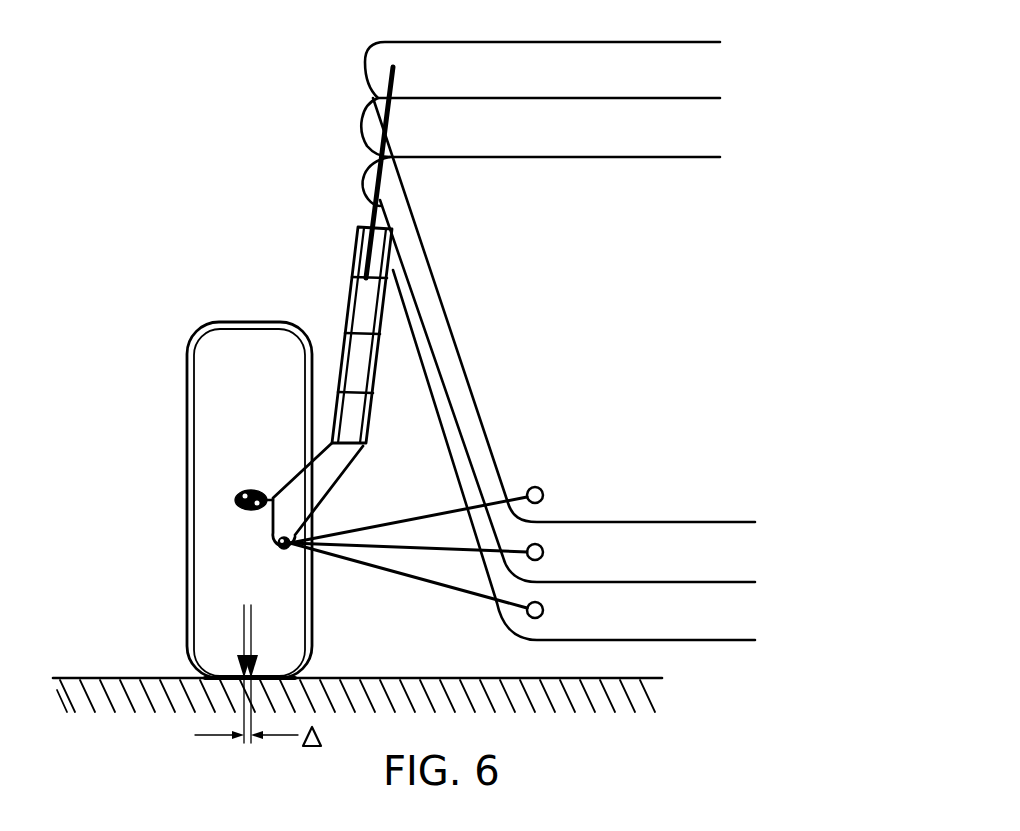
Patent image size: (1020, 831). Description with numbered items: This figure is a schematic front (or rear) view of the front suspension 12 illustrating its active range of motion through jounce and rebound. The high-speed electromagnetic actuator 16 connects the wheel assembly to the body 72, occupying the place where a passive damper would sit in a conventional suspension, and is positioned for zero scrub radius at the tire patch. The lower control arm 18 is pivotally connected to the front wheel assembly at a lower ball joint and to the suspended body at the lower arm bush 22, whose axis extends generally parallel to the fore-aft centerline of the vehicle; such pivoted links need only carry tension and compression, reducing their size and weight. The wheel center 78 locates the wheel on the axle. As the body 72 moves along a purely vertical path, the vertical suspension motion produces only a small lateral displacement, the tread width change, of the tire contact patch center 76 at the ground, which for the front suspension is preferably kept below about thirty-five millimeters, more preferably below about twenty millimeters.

The front wheel suspension assembly 12 is at (118, 451).
The high-speed electromagnetic actuator 16 is at (351, 275).
The lower control arm 18 is at (420, 552).
The lower arm bush 22 is at (546, 553).
The body 72 is at (591, 42).
The tire contact patch center 76 is at (243, 678).
The wheel center 78 is at (235, 500).